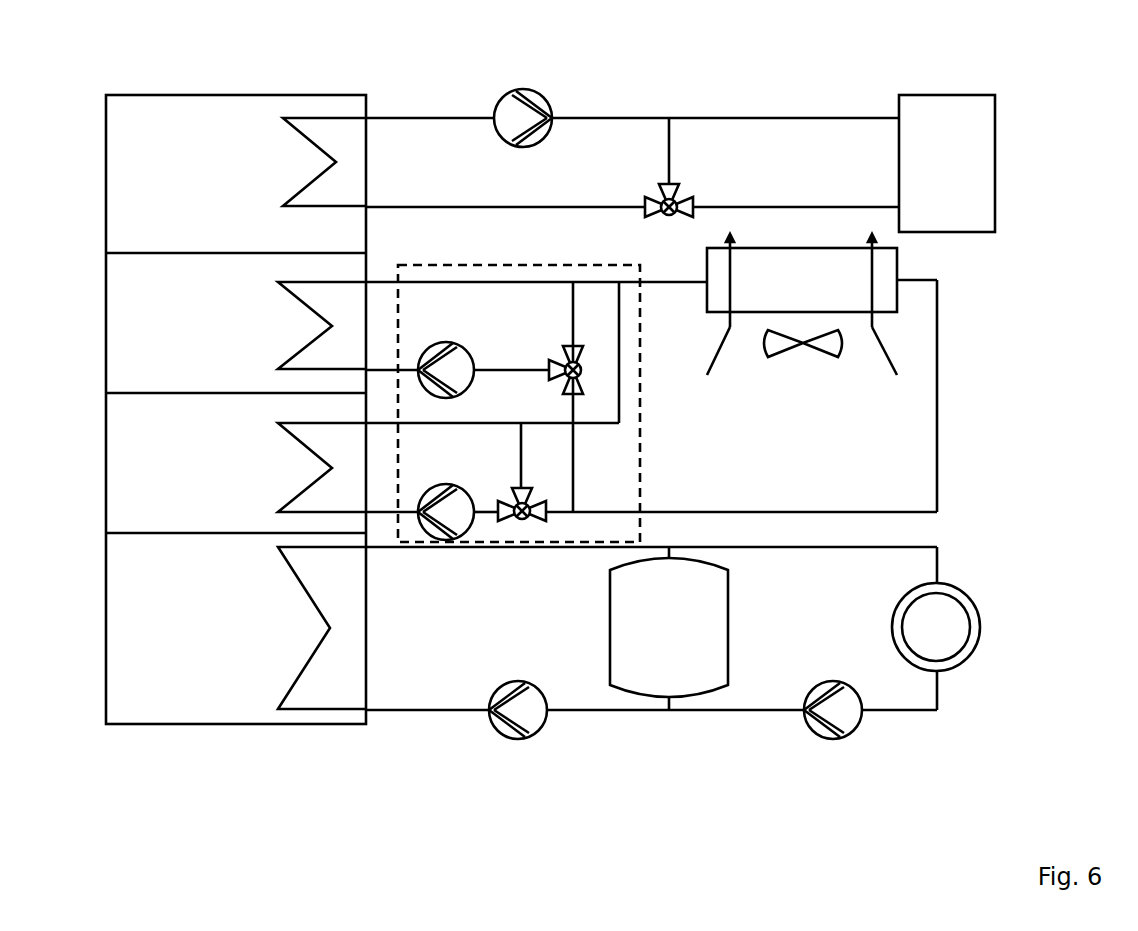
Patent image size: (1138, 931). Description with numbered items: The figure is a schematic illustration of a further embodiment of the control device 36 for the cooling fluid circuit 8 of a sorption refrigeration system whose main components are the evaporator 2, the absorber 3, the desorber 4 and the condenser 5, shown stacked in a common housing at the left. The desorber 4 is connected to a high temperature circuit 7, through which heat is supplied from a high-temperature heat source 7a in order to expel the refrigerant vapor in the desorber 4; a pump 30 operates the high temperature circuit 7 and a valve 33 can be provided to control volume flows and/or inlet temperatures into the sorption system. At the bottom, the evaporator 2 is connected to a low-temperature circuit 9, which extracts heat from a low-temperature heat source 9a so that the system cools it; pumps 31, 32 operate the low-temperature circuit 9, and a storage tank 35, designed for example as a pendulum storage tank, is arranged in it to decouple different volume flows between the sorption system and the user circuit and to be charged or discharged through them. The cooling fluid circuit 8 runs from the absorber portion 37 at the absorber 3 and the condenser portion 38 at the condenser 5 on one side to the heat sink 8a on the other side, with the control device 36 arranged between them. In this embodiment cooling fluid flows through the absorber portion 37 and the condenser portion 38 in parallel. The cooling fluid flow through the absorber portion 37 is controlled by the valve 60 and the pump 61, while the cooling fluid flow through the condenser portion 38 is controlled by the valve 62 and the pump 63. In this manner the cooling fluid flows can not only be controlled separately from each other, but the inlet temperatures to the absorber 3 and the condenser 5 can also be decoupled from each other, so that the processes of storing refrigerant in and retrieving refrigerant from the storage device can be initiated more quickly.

The evaporator 2 is at (289, 628).
The absorber 3 is at (236, 494).
The desorber 4 is at (236, 185).
The condenser 5 is at (236, 351).
The high temperature circuit 7 is at (713, 112).
The high-temperature heat source 7a is at (947, 163).
The cooling fluid circuit 8 is at (865, 510).
The heat sink 8a is at (768, 304).
The low-temperature circuit 9 is at (895, 708).
The low-temperature heat source 9a is at (936, 609).
The pump 30 is at (505, 95).
The pump 31 is at (505, 685).
The pump 32 is at (815, 688).
The valve 33 is at (650, 197).
The storage tank 35 is at (675, 628).
The control device 36 is at (640, 468).
The absorber portion 37 is at (300, 491).
The condenser portion 38 is at (304, 349).
The valve 60 is at (535, 495).
The pump 61 is at (467, 492).
The valve 62 is at (585, 365).
The pump 63 is at (470, 347).